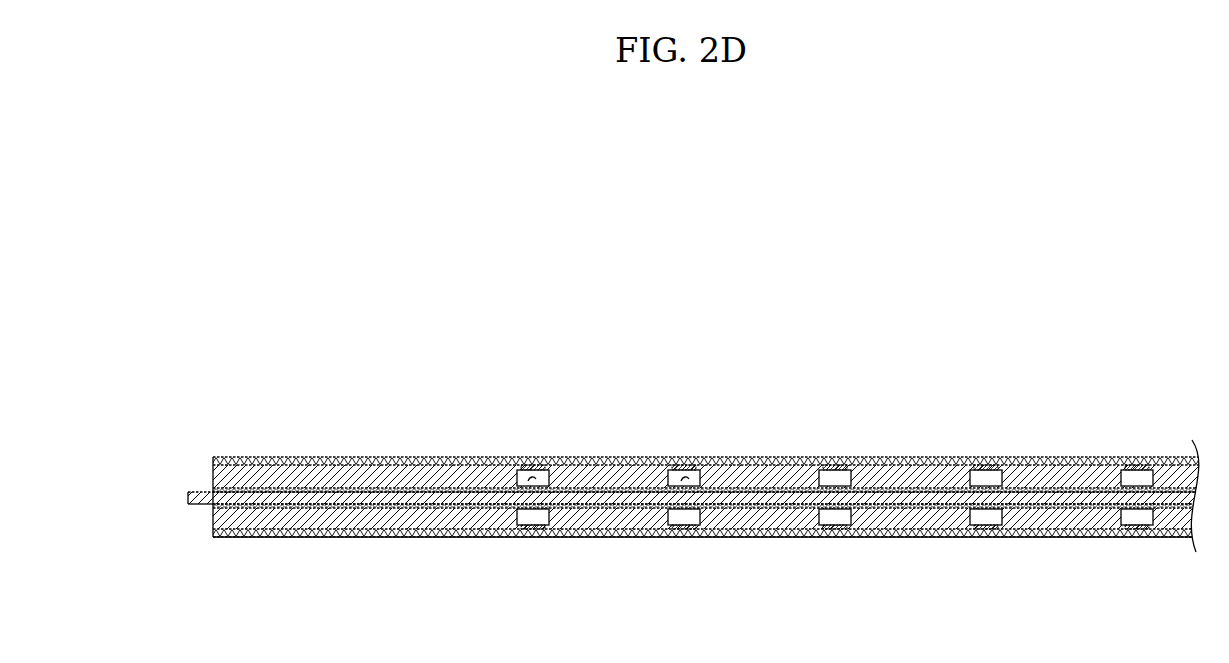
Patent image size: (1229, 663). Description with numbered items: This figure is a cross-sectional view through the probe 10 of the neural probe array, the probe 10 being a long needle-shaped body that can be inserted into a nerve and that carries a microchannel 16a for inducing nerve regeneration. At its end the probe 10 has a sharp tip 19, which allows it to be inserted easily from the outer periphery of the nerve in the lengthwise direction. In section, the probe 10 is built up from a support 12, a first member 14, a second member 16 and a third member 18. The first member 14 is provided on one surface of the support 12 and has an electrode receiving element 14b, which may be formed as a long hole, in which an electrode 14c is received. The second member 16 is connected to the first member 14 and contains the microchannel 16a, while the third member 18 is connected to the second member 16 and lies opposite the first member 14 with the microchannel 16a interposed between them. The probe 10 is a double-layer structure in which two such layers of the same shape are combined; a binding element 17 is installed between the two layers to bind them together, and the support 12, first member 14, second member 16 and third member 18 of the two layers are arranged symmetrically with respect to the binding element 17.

The probe 10 is at (289, 261).
The support 12 is at (214, 461).
The first member 14 is at (214, 469).
The electrode receiving element 14b is at (853, 468).
The electrode 14c is at (532, 466).
The second member 16 is at (214, 489).
The microchannel 16a is at (686, 480).
The binding element 17 is at (188, 503).
The third member 18 is at (188, 494).
The sharp tip 19 is at (224, 538).